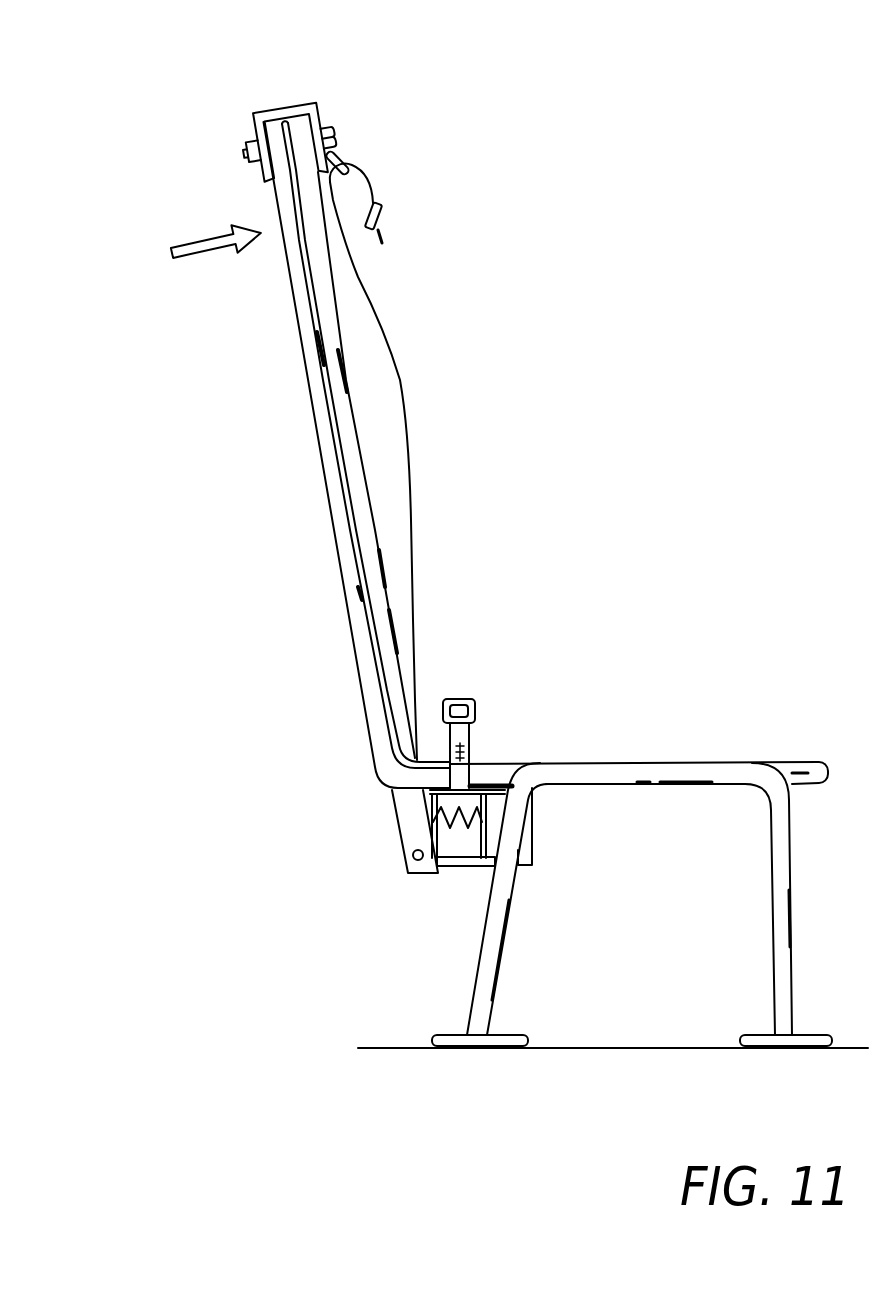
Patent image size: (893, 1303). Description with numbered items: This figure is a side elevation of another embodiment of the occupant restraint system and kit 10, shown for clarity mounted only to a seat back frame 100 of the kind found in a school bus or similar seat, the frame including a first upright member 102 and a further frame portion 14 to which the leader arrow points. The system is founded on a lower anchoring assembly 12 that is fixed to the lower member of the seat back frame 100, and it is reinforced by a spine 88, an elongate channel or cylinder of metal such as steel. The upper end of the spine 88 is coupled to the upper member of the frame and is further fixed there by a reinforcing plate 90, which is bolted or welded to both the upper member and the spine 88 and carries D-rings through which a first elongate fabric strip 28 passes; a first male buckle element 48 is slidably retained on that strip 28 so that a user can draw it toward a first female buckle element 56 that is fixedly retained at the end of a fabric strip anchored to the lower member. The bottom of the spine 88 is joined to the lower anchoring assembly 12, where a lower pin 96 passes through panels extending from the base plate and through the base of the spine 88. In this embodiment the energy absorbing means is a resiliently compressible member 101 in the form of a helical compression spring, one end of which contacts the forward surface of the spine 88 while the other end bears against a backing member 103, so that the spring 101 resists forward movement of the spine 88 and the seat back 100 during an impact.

The occupant restraint system and kit 10 is at (733, 165).
The lower anchoring assembly 12 is at (438, 900).
The seat back 14 is at (381, 118).
The first elongate fabric strip 28 is at (409, 419).
The first male buckle element 48 is at (384, 214).
The first female buckle element 56 is at (466, 701).
The spine 88 is at (341, 318).
The reinforcing plate 90 is at (253, 113).
The lower pin 96 is at (415, 860).
The seat back frame 100 is at (243, 344).
The resiliently compressible member 101 is at (436, 821).
The first upright member 102 is at (316, 437).
The backing member 103 is at (496, 780).